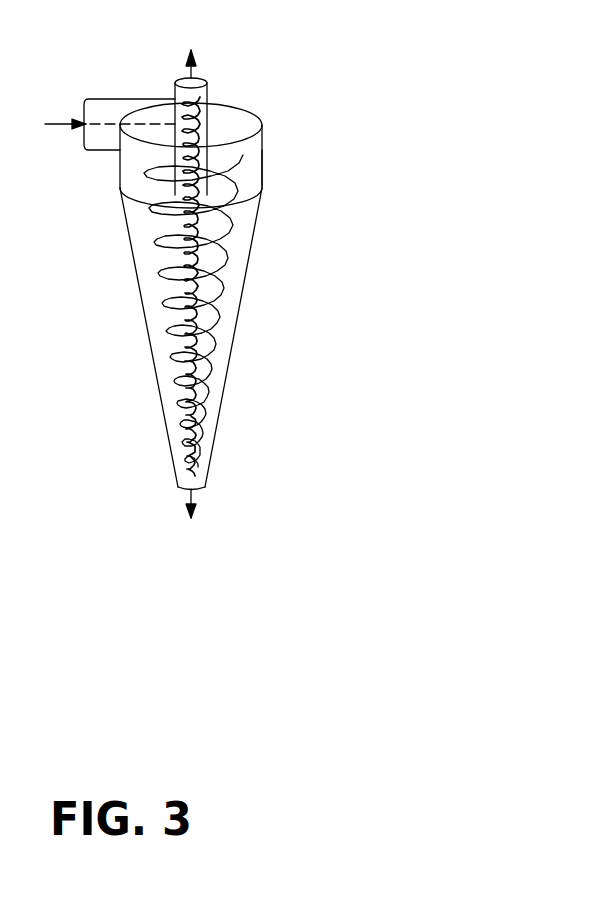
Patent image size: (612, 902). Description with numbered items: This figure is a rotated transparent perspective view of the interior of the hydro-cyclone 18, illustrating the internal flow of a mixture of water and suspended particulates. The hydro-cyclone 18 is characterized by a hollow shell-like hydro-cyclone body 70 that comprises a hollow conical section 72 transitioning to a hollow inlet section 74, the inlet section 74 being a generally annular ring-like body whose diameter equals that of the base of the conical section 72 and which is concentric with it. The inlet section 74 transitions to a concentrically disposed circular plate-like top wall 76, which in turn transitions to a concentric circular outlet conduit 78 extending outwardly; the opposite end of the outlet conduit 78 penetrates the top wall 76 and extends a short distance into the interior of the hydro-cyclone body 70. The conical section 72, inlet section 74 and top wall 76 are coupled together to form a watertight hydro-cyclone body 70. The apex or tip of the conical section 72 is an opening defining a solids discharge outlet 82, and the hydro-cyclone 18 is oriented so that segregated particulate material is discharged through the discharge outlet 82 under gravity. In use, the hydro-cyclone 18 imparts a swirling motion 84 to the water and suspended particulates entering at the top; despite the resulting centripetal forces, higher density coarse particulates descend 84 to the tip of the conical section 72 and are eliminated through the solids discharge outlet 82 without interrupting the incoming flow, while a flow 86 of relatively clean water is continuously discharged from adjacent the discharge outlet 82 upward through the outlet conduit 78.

The hydro-cyclone 18 is at (256, 274).
The hydro-cyclone body 70 is at (299, 170).
The conical section 72 is at (248, 297).
The inlet section 74 is at (121, 188).
The top wall 76 is at (243, 118).
The outlet conduit 78 is at (208, 96).
The solids discharge outlet 82 is at (192, 494).
The swirling motion 84 is at (157, 286).
The flow of relatively clean water 86 is at (210, 331).